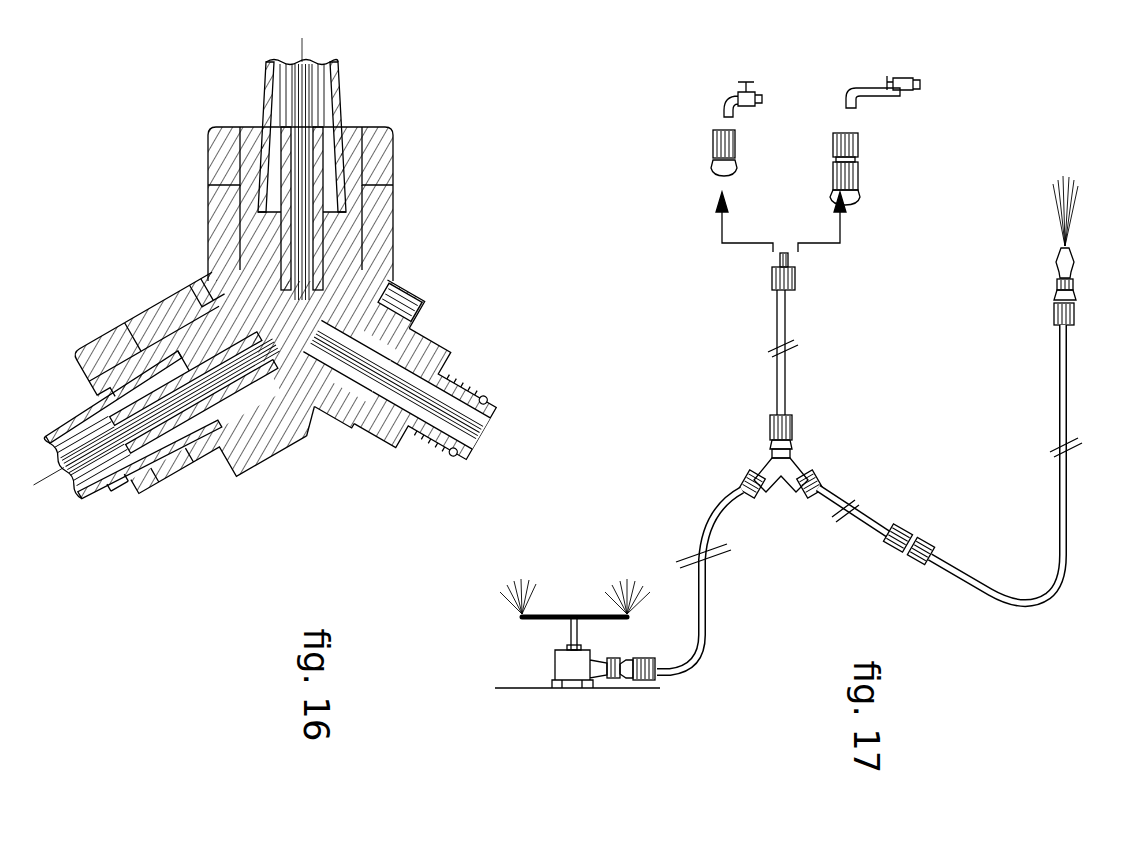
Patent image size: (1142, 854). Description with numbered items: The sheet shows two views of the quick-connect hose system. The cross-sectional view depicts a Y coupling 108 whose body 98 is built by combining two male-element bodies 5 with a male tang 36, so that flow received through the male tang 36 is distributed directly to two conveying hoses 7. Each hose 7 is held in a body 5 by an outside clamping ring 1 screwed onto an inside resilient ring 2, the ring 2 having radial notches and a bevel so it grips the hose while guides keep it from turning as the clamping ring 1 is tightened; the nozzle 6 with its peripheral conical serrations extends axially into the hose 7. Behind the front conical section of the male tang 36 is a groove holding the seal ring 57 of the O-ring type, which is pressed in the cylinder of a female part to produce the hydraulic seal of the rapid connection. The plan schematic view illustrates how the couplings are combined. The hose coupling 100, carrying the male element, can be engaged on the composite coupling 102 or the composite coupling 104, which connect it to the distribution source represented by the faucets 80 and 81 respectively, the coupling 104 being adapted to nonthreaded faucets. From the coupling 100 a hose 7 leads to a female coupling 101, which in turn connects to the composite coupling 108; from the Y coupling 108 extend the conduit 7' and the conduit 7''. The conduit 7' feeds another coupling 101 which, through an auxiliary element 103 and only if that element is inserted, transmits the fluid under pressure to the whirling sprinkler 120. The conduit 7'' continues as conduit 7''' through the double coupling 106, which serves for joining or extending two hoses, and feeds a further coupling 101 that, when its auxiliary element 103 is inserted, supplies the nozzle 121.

In FIG. 16, the outside clamping ring 1 is at (386, 140).
In FIG. 16, the inside resilient ring 2 is at (140, 478).
In FIG. 16, the bell carrier or male element 5 is at (385, 213).
In FIG. 16, the nozzle 6 is at (117, 482).
In FIG. 16, the hose 7 is at (179, 280).
In FIG. 17, the hose 7 is at (795, 352).
In FIG. 17, the conduit 7' is at (702, 581).
In FIG. 17, the conduit 7'' is at (858, 506).
In FIG. 17, the conduit 7''' is at (1006, 464).
In FIG. 16, the male element 36 is at (462, 388).
In FIG. 16, the seal ring 57 is at (447, 466).
In FIG. 16, the body 98 is at (205, 280).
In FIG. 16, the Y coupling 108 is at (418, 289).
In FIG. 17, the Y coupling 108 is at (797, 468).
In FIG. 17, the faucet 80 is at (732, 98).
In FIG. 17, the faucet 81 is at (858, 90).
In FIG. 17, the hose coupling 100 is at (795, 284).
In FIG. 17, the female coupling 101 is at (770, 430).
In FIG. 17, the auxiliary element 102 is at (713, 150).
In FIG. 17, the auxiliary element 103 is at (613, 680).
In FIG. 17, the composite coupling 104 is at (858, 172).
In FIG. 17, the double coupling 106 is at (912, 537).
In FIG. 17, the whirling sprinkler 120 is at (558, 669).
In FIG. 17, the nozzle 121 is at (1060, 260).